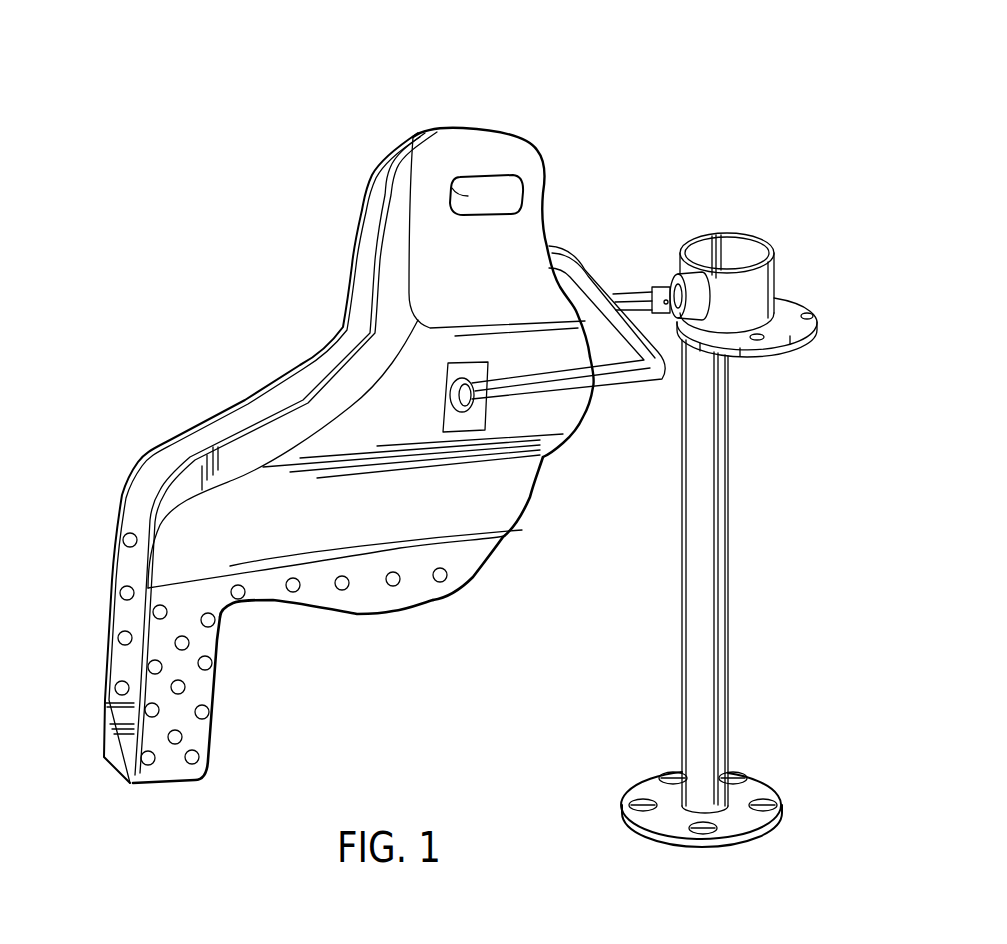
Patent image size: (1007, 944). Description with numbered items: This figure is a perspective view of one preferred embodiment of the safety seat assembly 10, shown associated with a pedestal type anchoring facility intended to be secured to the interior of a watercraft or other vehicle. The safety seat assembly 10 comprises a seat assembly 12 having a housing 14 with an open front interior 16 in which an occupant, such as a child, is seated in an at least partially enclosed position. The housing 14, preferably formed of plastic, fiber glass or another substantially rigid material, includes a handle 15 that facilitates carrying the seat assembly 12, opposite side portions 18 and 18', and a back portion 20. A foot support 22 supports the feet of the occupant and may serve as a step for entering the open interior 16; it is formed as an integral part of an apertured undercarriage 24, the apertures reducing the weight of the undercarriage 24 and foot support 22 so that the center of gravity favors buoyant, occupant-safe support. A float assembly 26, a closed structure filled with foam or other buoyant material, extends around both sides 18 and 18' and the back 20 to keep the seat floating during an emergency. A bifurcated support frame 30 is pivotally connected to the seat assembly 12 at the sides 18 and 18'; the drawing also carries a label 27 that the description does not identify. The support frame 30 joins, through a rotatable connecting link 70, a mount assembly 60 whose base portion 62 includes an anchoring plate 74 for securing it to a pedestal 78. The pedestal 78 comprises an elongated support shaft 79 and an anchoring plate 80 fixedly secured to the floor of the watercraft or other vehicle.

The safety seat assembly 10 is at (857, 115).
The seat assembly 12 is at (333, 245).
The housing 14 is at (528, 505).
The handle 15 is at (463, 187).
The open front interior 16 is at (347, 393).
The side portion 18 is at (355, 459).
The side portion 18' is at (276, 453).
The back portion 20 is at (545, 178).
The foot support 22 is at (227, 703).
The undercarriage 24 is at (380, 615).
The float assembly 26 is at (583, 420).
The mounting bracket 27 is at (413, 430).
The support frame 30 is at (578, 237).
The mount assembly 60 is at (810, 258).
The base portion 62 is at (737, 242).
The connecting link 70 is at (650, 287).
The anchoring plate 74 is at (820, 323).
The pedestal 78 is at (748, 467).
The support shaft 79 is at (713, 647).
The anchoring plate 80 is at (787, 810).